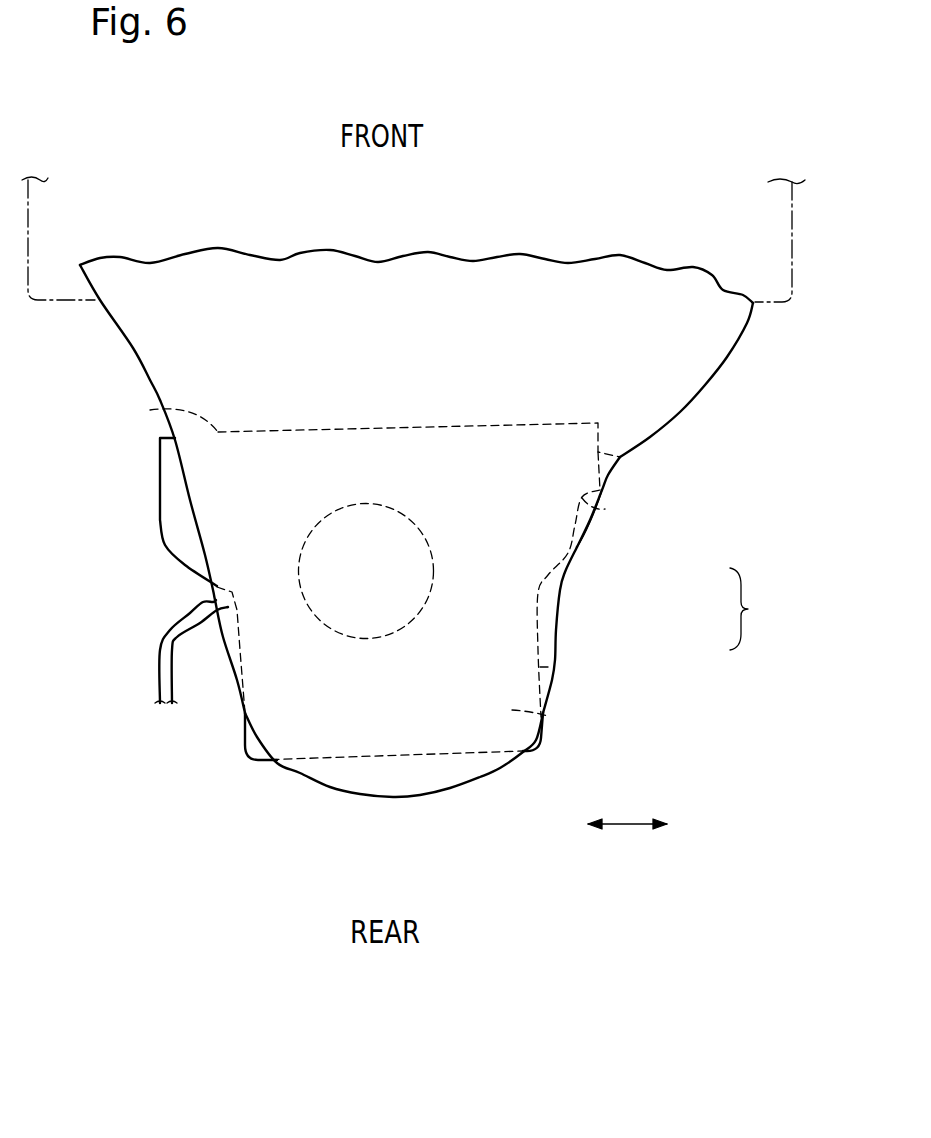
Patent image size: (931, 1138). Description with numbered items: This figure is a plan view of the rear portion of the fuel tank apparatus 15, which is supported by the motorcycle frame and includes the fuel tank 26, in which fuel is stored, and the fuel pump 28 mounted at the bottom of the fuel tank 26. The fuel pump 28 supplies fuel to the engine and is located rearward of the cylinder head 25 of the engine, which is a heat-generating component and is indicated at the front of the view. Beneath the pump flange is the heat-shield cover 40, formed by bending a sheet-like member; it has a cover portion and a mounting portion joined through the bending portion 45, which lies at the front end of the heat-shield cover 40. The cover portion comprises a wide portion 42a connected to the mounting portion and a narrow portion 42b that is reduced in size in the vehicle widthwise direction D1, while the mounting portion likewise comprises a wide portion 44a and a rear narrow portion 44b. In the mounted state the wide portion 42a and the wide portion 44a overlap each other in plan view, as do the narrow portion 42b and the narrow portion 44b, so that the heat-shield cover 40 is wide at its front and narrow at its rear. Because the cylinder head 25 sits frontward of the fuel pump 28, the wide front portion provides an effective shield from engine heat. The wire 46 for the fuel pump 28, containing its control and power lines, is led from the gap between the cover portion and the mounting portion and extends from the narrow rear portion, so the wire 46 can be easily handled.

The cylinder head 25 is at (5, 165).
The bending portion 45 is at (150, 410).
The heat-shield cover 40 is at (160, 541).
The wire 46 is at (160, 677).
The fuel tank 26 is at (680, 412).
The wide portion of the mounting portion 44a is at (620, 457).
The wide portion of the cover portion 42a is at (605, 509).
The narrow portion of the mounting portion 44b is at (555, 666).
The narrow portion of the cover portion 42b is at (548, 716).
The fuel pump 28 is at (433, 578).
The fuel tank apparatus 15 is at (752, 609).
The vehicle widthwise direction D1 is at (625, 822).